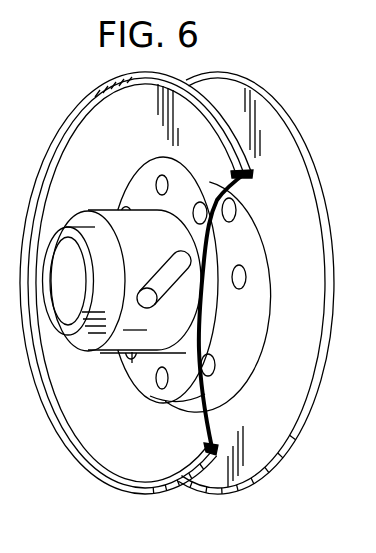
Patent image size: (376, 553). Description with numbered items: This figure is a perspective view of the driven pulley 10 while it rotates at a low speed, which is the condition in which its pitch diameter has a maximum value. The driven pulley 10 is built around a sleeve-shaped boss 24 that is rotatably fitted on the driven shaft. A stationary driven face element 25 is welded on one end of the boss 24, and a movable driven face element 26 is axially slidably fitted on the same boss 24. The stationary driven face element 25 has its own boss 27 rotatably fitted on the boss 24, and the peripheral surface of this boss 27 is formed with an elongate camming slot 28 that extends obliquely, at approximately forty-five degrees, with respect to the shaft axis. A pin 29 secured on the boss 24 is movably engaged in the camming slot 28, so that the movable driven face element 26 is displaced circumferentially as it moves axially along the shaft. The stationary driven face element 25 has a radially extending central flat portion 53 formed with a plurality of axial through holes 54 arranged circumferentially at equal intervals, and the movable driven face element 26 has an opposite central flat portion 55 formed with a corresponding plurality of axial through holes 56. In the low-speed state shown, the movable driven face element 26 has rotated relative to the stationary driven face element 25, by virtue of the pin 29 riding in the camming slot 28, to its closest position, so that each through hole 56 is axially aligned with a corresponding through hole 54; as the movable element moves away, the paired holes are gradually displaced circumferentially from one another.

The driven pulley 10 is at (182, 71).
The sleeve-shaped boss 24 is at (90, 240).
The stationary driven face element 25 is at (267, 463).
The movable driven face element 26 is at (97, 484).
The boss 27 is at (117, 217).
The camming slot 28 is at (162, 256).
The pin 29 is at (153, 302).
The central flat portion 53 is at (232, 326).
The axial through holes 54 is at (248, 268).
The central flat portion 55 is at (178, 392).
The axial through holes 56 is at (173, 388).